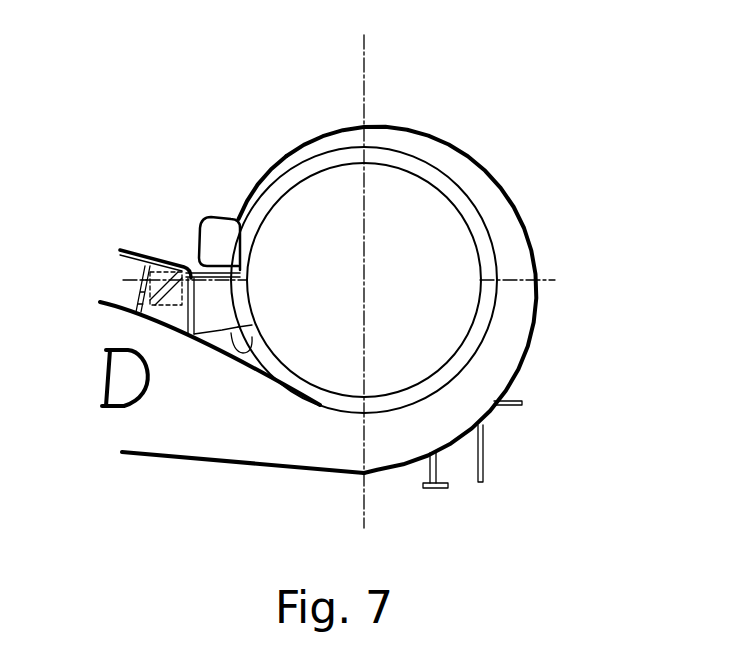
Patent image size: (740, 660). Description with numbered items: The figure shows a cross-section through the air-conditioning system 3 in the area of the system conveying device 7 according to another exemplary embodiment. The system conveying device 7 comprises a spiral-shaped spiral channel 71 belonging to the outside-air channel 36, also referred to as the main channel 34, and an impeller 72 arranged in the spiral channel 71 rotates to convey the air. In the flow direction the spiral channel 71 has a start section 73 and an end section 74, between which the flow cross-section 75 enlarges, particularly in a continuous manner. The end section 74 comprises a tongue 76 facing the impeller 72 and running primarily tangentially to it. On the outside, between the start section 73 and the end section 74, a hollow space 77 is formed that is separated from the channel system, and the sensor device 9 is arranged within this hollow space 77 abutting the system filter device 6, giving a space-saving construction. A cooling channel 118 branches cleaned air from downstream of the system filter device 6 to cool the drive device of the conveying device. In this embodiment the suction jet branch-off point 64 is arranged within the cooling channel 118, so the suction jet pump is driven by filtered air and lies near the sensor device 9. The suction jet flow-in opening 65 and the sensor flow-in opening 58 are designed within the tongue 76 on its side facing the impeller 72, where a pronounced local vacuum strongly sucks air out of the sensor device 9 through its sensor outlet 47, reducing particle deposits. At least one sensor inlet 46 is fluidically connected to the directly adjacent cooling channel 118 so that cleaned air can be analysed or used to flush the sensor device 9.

The air-conditioning system 3 is at (103, 180).
The system filter device 6 is at (108, 308).
The system conveying device 7 is at (480, 140).
The sensor device 9 is at (175, 310).
The main channel 34 is at (450, 484).
The outside-air channel 36 is at (400, 484).
The sensor inlet 46 is at (244, 275).
The sensor outlet 47 is at (240, 322).
The sensor flow-in opening 58 is at (310, 343).
The suction jet branch-off point 64 is at (236, 256).
The suction jet flow-in opening 65 is at (252, 347).
The spiral channel 71 is at (532, 240).
The impeller 72 is at (388, 162).
The start section 73 is at (238, 207).
The end section 74 is at (232, 466).
The flow cross-section 75 is at (483, 347).
The tongue 76 is at (257, 348).
The hollow space 77 is at (172, 266).
The cooling channel 118 is at (207, 213).